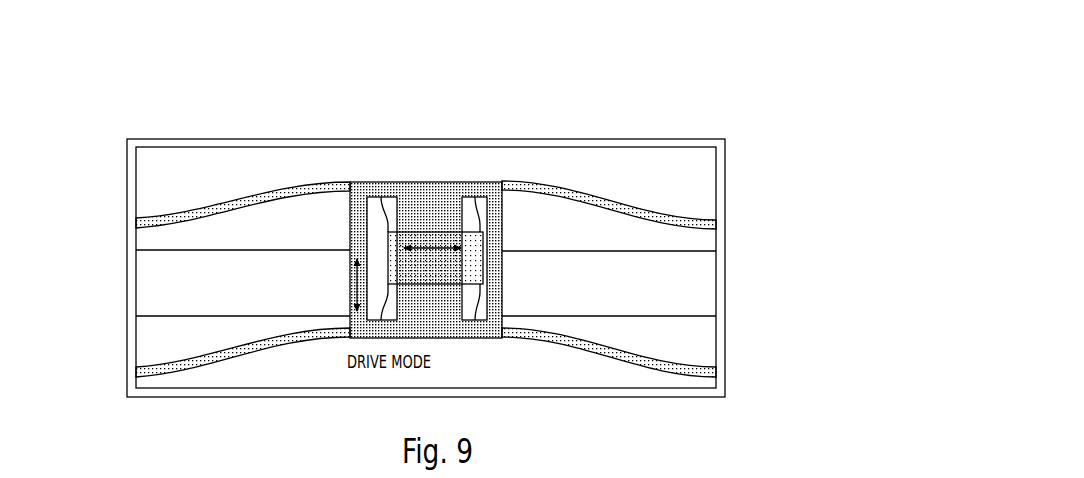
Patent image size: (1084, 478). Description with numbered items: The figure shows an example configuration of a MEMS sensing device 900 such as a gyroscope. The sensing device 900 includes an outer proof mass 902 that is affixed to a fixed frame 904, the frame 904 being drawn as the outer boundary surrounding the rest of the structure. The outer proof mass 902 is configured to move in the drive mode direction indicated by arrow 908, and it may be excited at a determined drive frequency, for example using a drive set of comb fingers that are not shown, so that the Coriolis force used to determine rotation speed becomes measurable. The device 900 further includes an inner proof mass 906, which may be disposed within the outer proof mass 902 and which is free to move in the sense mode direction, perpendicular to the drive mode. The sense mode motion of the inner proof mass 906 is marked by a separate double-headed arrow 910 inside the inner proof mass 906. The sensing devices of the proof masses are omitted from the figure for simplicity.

The MEMS sensing device 900 is at (618, 62).
The outer proof mass 902 is at (329, 182).
The fixed frame 904 is at (727, 221).
The inner proof mass 906 is at (418, 232).
The arrow 908 is at (350, 265).
The sense mass / sense mode motion 910 is at (437, 248).